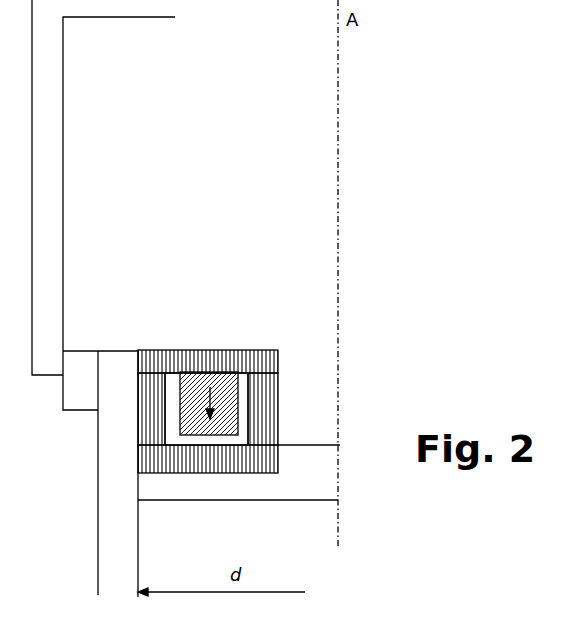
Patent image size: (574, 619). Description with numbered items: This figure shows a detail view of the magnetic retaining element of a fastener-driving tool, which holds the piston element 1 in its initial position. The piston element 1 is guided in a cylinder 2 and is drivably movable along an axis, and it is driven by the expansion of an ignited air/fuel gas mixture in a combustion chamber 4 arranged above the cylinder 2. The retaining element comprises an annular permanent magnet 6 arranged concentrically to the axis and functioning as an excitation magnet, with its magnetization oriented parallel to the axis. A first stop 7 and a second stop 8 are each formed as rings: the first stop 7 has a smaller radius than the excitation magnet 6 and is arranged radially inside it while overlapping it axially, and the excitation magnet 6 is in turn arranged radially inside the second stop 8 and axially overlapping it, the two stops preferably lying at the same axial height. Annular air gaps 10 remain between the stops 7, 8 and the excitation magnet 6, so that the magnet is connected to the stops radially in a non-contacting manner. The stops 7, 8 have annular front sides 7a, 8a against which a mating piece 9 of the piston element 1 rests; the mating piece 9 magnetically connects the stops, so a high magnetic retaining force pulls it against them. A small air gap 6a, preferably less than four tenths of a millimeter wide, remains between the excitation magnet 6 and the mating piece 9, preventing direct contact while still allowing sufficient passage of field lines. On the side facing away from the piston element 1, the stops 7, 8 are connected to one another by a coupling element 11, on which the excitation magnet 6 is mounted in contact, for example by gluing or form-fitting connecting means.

The piston element 1 is at (318, 478).
The cylinder 2 is at (123, 562).
The combustion chamber 4 is at (47, 195).
The permanent magnet 6 is at (237, 399).
The air gap 6a is at (198, 447).
The first stop 7 is at (273, 397).
The annular front side of first stop 7a is at (267, 450).
The second stop 8 is at (138, 414).
The annular front side of second stop 8a is at (142, 452).
The mating piece 9 is at (220, 463).
The annular air gaps 10 is at (240, 385).
The coupling element 11 is at (173, 393).